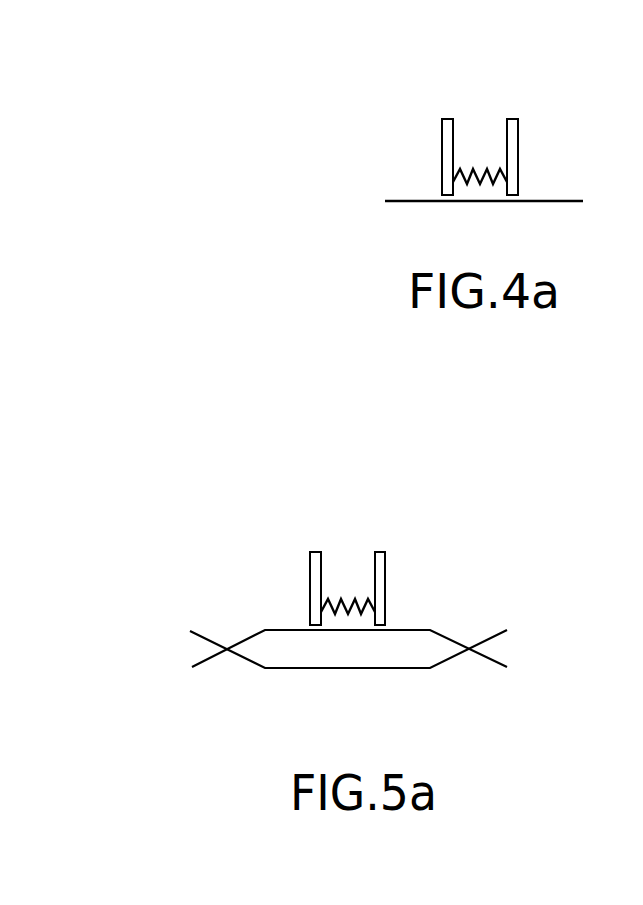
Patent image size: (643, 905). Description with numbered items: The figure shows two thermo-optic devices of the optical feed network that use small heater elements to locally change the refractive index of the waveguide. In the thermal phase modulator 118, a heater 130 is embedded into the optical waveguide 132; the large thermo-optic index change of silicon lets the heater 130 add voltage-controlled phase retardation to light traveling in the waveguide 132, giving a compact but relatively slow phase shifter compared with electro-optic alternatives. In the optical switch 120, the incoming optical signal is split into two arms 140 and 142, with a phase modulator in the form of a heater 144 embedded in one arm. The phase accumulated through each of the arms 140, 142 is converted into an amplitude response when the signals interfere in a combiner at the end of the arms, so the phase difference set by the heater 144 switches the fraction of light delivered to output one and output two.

In FIG. 4A, the thermal phase modulator 118 is at (385, 84).
In FIG. 4A, the heater 130 is at (443, 152).
In FIG. 4A, the optical waveguide 132 is at (400, 201).
In FIG. 5A, the optical switch 120 is at (246, 525).
In FIG. 5A, the arm 140 is at (248, 640).
In FIG. 5A, the arm 142 is at (282, 668).
In FIG. 5A, the heater 144 is at (385, 563).